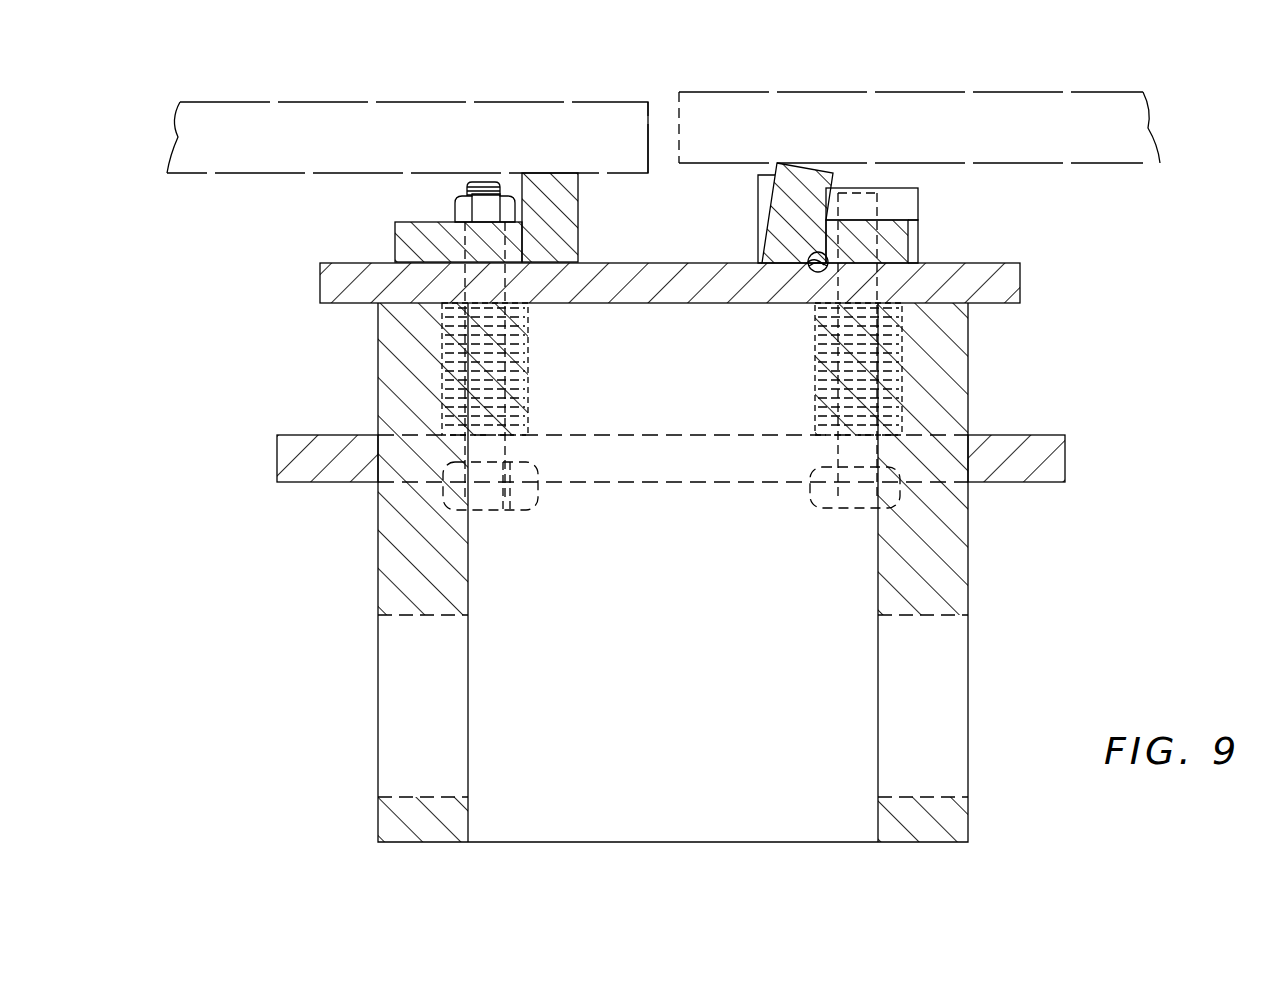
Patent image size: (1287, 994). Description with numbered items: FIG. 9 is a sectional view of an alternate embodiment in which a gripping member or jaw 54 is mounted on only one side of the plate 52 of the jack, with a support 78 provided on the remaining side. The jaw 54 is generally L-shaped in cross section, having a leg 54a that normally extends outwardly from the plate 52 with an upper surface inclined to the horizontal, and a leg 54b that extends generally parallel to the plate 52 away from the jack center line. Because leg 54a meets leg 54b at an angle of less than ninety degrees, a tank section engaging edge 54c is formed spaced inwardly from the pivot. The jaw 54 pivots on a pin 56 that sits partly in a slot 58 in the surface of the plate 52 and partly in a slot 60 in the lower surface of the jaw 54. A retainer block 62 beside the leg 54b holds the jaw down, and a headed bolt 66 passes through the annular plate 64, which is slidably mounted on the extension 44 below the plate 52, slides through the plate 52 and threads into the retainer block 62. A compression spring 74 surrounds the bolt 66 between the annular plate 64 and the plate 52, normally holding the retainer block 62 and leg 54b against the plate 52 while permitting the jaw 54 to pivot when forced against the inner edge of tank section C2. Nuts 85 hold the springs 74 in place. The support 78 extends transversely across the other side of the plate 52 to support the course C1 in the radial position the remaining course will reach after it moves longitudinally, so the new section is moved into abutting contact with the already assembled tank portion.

The tank section C1 is at (334, 96).
The tank section C2 is at (1101, 86).
The extension 44 is at (962, 581).
The plate 52 is at (1012, 290).
The gripping member or jaw 54 is at (850, 207).
The leg 54a is at (802, 176).
The leg 54b is at (902, 243).
The tank section engaging edge 54c is at (808, 178).
The pin 56 is at (816, 272).
The slot 58 is at (810, 270).
The slot 60 is at (811, 255).
The retainer block 62 is at (903, 202).
The annular plate 64 is at (1043, 468).
The headed bolt 66 is at (530, 497).
The compression spring 74 is at (523, 380).
The support 78 is at (562, 224).
The nut 85 is at (458, 213).